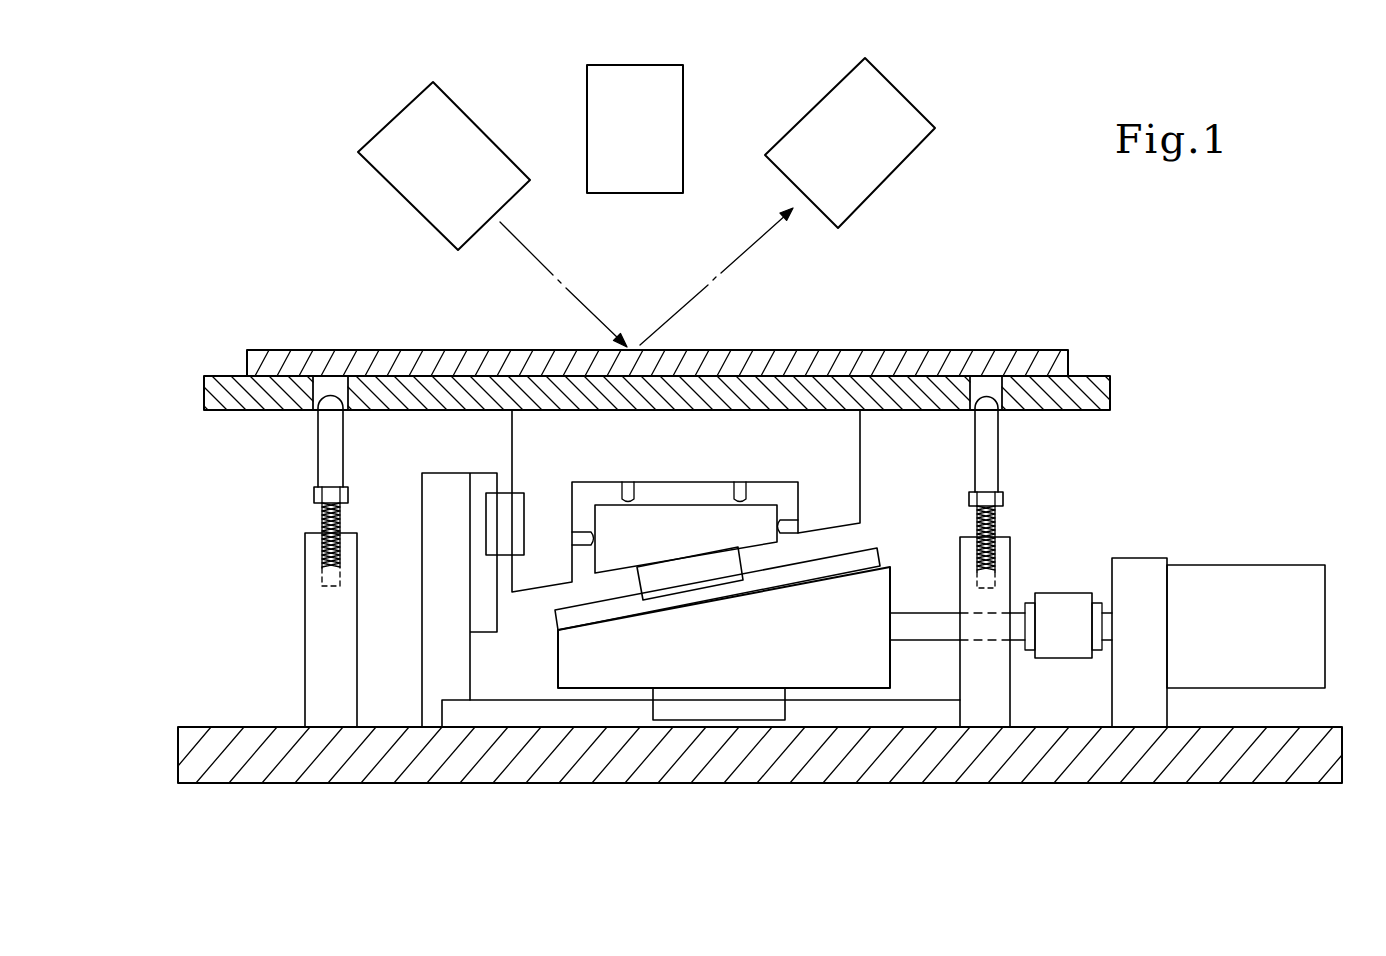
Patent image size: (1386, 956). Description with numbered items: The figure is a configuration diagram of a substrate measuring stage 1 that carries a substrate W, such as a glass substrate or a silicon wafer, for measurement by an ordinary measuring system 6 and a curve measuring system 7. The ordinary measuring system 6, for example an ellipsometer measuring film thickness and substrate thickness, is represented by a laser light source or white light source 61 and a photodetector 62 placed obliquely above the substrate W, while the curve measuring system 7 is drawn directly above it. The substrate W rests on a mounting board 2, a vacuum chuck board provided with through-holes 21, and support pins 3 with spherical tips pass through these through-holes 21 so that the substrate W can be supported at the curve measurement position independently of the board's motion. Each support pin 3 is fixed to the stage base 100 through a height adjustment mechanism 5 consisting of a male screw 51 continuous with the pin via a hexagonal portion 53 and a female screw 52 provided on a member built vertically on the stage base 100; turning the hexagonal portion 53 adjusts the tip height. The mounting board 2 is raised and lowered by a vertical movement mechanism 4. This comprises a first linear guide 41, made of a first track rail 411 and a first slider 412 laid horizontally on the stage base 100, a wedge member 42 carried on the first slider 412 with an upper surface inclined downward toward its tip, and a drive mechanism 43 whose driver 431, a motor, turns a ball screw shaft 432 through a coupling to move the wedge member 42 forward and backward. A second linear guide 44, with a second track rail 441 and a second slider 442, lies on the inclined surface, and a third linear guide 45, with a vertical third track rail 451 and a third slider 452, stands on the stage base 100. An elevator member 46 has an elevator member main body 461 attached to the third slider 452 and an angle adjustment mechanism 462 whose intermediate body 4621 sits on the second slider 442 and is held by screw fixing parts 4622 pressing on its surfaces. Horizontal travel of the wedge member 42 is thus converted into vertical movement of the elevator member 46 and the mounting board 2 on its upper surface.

The substrate measuring stage 1 is at (305, 245).
The mounting board 2 is at (204, 392).
The through-holes 21 is at (318, 383).
The support members 3 is at (317, 445).
The vertical movement mechanism 4 is at (910, 684).
The first linear guide 41 is at (795, 838).
The first track rail 411 is at (847, 715).
The first slider 412 is at (767, 723).
The wedge member 42 is at (788, 656).
The drive mechanism 43 is at (1306, 549).
The driver 431 is at (1265, 565).
The ball screw shaft 432 is at (930, 612).
The second linear guide 44 is at (600, 841).
The second track rail 441 is at (555, 613).
The second slider 442 is at (643, 600).
The third linear guide 45 is at (247, 612).
The third track rail 451 is at (470, 638).
The third slider 452 is at (487, 556).
The elevator member 46 is at (500, 446).
The elevator member main body 461 is at (560, 451).
The angle adjustment mechanism 462 is at (818, 440).
The intermediate body 4621 is at (780, 508).
The fixing part 4622 is at (748, 487).
The height adjustment mechanism 5 is at (232, 473).
The male screw 51 is at (322, 530).
The female screw 52 is at (322, 575).
The hexagonal portion 53 is at (314, 495).
The ordinary measuring system 6 is at (654, 190).
The laser light source or white light source 61 is at (393, 123).
The photodetector 62 is at (907, 97).
The curve measuring system 7 is at (637, 65).
The stage base 100 is at (1177, 783).
The substrate W is at (757, 352).